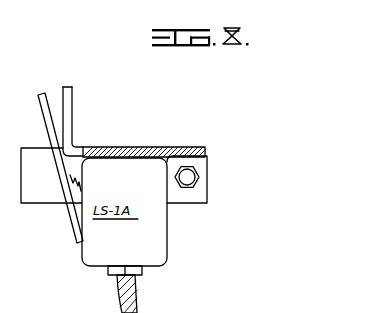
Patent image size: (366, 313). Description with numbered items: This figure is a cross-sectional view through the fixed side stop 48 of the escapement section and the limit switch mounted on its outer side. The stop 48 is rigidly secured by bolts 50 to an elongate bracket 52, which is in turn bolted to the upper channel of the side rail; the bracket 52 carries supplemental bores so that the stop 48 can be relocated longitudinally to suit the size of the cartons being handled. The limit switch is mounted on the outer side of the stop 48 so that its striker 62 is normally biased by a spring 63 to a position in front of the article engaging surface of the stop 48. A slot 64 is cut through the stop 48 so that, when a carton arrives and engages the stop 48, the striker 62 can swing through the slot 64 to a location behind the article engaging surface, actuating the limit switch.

The side stop 48 is at (72, 112).
The bolts 50 is at (199, 177).
The bracket 52 is at (28, 197).
The striker 62 is at (44, 119).
The spring 63 is at (81, 191).
The slot 64 is at (70, 100).